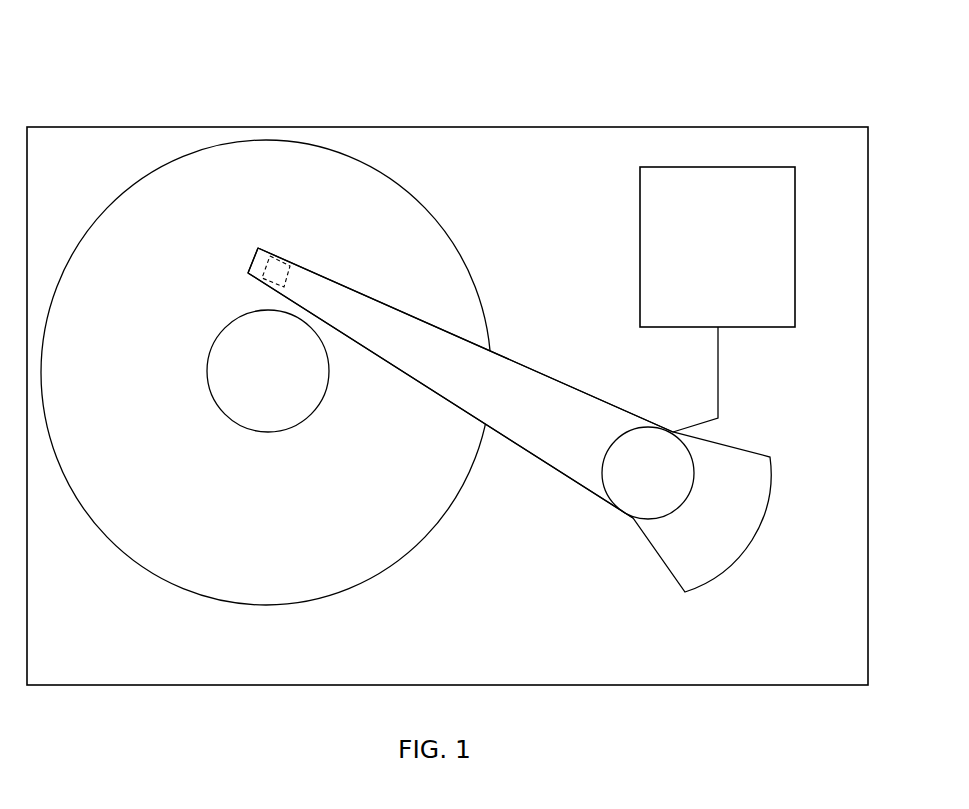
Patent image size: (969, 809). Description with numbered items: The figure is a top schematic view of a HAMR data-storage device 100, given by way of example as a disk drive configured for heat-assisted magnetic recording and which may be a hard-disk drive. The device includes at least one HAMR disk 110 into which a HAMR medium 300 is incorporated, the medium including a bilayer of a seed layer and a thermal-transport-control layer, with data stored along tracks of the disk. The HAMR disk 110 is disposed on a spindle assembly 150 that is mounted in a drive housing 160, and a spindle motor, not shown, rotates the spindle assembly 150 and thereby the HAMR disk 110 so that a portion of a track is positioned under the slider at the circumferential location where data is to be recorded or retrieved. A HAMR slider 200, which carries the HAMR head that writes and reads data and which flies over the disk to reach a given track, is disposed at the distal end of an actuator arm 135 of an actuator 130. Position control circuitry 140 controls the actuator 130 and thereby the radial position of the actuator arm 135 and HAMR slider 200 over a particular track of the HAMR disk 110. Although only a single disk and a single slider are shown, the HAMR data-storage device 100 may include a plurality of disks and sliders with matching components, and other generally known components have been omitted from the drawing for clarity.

The HAMR data-storage device 100 is at (176, 99).
The HAMR disk 110 is at (402, 190).
The actuator 130 is at (560, 508).
The actuator arm 135 is at (502, 358).
The position control circuitry 140 is at (732, 259).
The spindle assembly 150 is at (288, 376).
The drive housing 160 is at (567, 125).
The HAMR slider 200 is at (287, 266).
The HAMR medium 300 is at (218, 237).